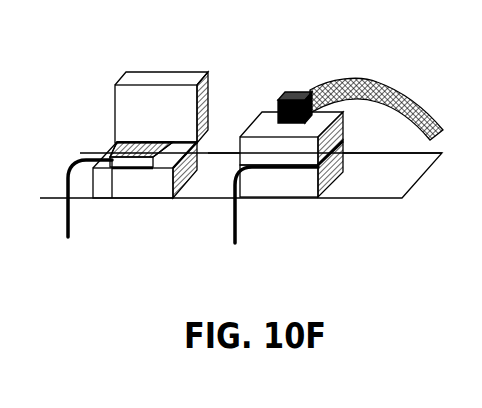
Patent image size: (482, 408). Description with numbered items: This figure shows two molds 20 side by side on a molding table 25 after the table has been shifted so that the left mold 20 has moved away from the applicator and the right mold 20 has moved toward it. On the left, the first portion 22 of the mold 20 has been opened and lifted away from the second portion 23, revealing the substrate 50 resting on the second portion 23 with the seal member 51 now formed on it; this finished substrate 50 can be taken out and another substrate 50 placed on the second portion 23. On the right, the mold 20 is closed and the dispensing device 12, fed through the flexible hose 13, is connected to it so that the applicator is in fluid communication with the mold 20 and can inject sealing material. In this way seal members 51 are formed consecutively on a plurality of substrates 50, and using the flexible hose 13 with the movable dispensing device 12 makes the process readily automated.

The dispensing device 12 is at (285, 93).
The flexible hose 13 is at (362, 83).
The mold 20 is at (192, 58).
The first portion 22 is at (153, 72).
The second portion 23 is at (132, 192).
The molding table 25 is at (380, 188).
The substrate 50 is at (112, 185).
The seal member 51 is at (118, 145).